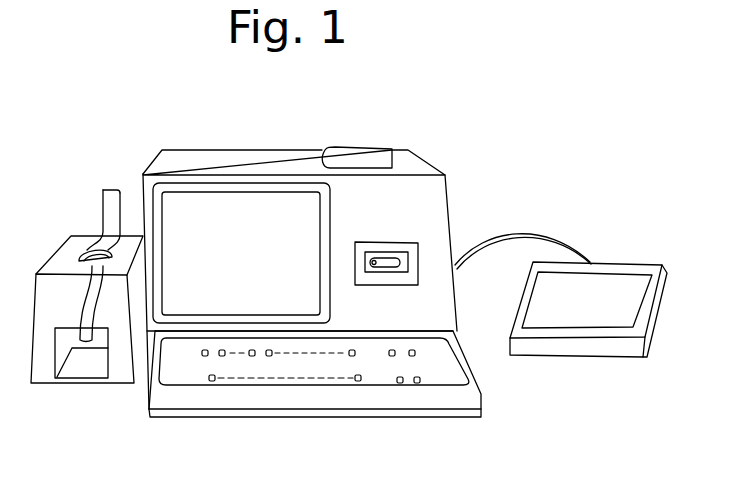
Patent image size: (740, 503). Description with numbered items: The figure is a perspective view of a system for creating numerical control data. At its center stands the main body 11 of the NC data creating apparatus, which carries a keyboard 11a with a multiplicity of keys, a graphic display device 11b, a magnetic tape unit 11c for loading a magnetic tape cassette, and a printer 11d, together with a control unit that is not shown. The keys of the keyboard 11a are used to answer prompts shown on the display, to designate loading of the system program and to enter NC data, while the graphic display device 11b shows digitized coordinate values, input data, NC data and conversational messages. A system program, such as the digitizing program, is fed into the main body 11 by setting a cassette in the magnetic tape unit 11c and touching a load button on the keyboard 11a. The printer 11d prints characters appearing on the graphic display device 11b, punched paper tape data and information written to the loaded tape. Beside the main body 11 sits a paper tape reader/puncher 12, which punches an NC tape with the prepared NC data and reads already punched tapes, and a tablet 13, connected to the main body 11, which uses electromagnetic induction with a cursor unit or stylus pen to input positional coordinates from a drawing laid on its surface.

The main body 11 is at (348, 133).
The keyboard 11a is at (187, 400).
The graphic display device 11b is at (208, 205).
The magnetic tape unit 11c is at (410, 243).
The printer 11d is at (382, 158).
The paper tape reader/puncher 12 is at (63, 229).
The tablet 13 is at (593, 256).